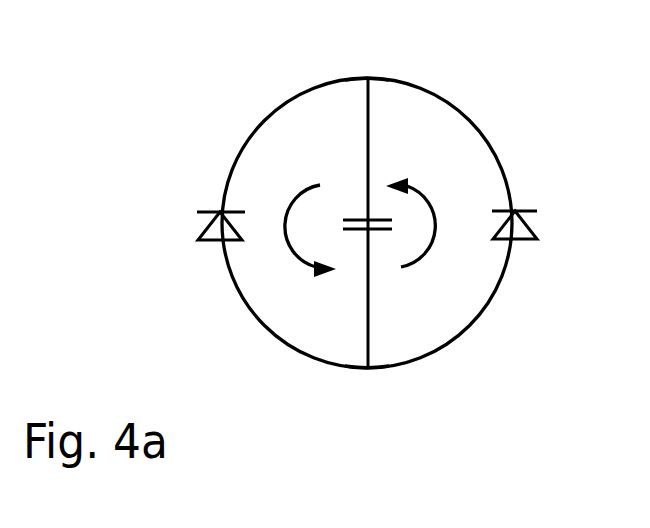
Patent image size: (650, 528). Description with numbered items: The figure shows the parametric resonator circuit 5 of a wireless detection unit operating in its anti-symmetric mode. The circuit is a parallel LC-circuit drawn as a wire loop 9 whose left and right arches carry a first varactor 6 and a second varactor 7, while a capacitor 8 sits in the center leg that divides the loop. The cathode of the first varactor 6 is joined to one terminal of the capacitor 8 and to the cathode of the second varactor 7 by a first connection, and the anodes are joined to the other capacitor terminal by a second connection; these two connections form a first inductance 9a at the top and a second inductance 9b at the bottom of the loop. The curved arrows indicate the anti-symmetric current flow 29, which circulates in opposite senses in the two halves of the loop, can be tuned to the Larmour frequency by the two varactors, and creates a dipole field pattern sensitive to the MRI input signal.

The parametric resonator circuit 5 is at (566, 150).
The first varactor 6 is at (205, 230).
The second varactor 7 is at (538, 232).
The capacitor 8 is at (362, 218).
The conductor loop 9 is at (450, 102).
The first inductance 9a is at (356, 68).
The second inductance 9b is at (406, 384).
The anti-symmetric current flow 29 is at (295, 262).